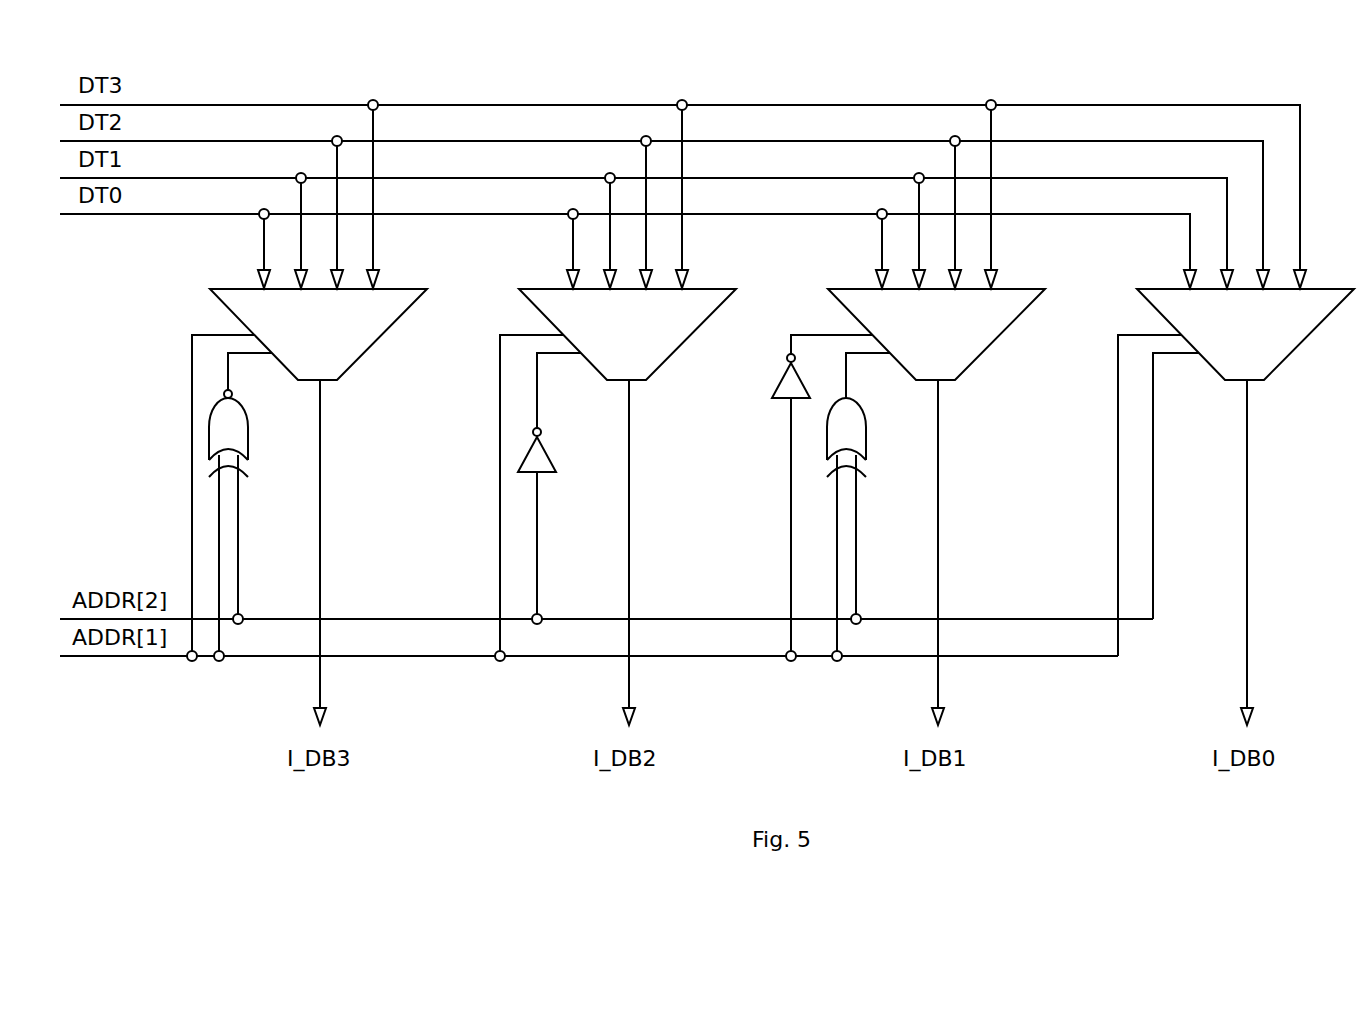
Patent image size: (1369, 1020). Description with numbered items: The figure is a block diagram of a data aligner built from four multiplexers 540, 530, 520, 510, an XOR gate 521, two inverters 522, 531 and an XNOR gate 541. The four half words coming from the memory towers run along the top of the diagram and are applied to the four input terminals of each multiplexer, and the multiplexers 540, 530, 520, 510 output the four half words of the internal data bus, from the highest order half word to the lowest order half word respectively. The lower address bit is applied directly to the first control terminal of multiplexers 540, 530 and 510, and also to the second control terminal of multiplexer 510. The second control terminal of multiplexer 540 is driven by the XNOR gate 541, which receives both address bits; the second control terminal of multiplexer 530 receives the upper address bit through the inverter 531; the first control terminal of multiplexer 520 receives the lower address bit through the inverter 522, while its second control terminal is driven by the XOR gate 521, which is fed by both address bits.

The multiplexer 510 is at (1264, 381).
The multiplexer 520 is at (955, 381).
The XOR gate 521 is at (866, 446).
The inverter 522 is at (771, 399).
The multiplexer 530 is at (646, 381).
The inverter 531 is at (553, 472).
The multiplexer 540 is at (337, 381).
The XNOR gate 541 is at (248, 458).